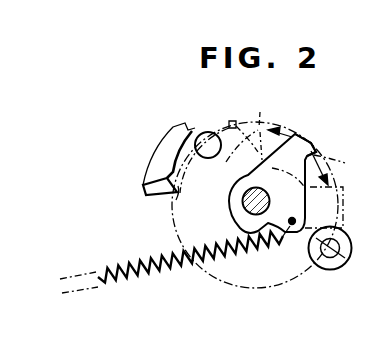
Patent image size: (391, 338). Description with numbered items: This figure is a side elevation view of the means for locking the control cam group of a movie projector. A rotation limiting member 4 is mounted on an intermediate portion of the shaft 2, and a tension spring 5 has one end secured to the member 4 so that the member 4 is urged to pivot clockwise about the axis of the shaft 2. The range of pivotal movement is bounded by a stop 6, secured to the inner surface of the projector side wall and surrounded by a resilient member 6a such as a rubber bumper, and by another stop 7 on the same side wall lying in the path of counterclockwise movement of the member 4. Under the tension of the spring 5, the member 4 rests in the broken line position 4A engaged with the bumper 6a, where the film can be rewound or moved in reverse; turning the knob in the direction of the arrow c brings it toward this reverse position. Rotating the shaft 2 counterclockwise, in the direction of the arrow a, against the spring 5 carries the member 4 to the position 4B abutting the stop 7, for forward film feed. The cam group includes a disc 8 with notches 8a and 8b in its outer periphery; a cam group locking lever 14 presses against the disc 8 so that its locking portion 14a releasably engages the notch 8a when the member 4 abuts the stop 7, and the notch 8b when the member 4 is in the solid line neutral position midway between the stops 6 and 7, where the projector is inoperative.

The shaft 2 is at (250, 204).
The rotation limiting member 4 is at (312, 142).
The broken line position 4A is at (343, 190).
The forward film feed position 4B is at (265, 136).
The tension spring 5 is at (161, 278).
The stop 6 is at (342, 240).
The resilient member 6a is at (345, 258).
The stop 7 is at (206, 136).
The disc 8 is at (282, 108).
The notch 8a is at (172, 194).
The notch 8b is at (232, 121).
The cam group locking lever 14 is at (173, 128).
The locking portion 14a is at (163, 183).
The arrow a is at (300, 130).
The arrow c is at (334, 164).